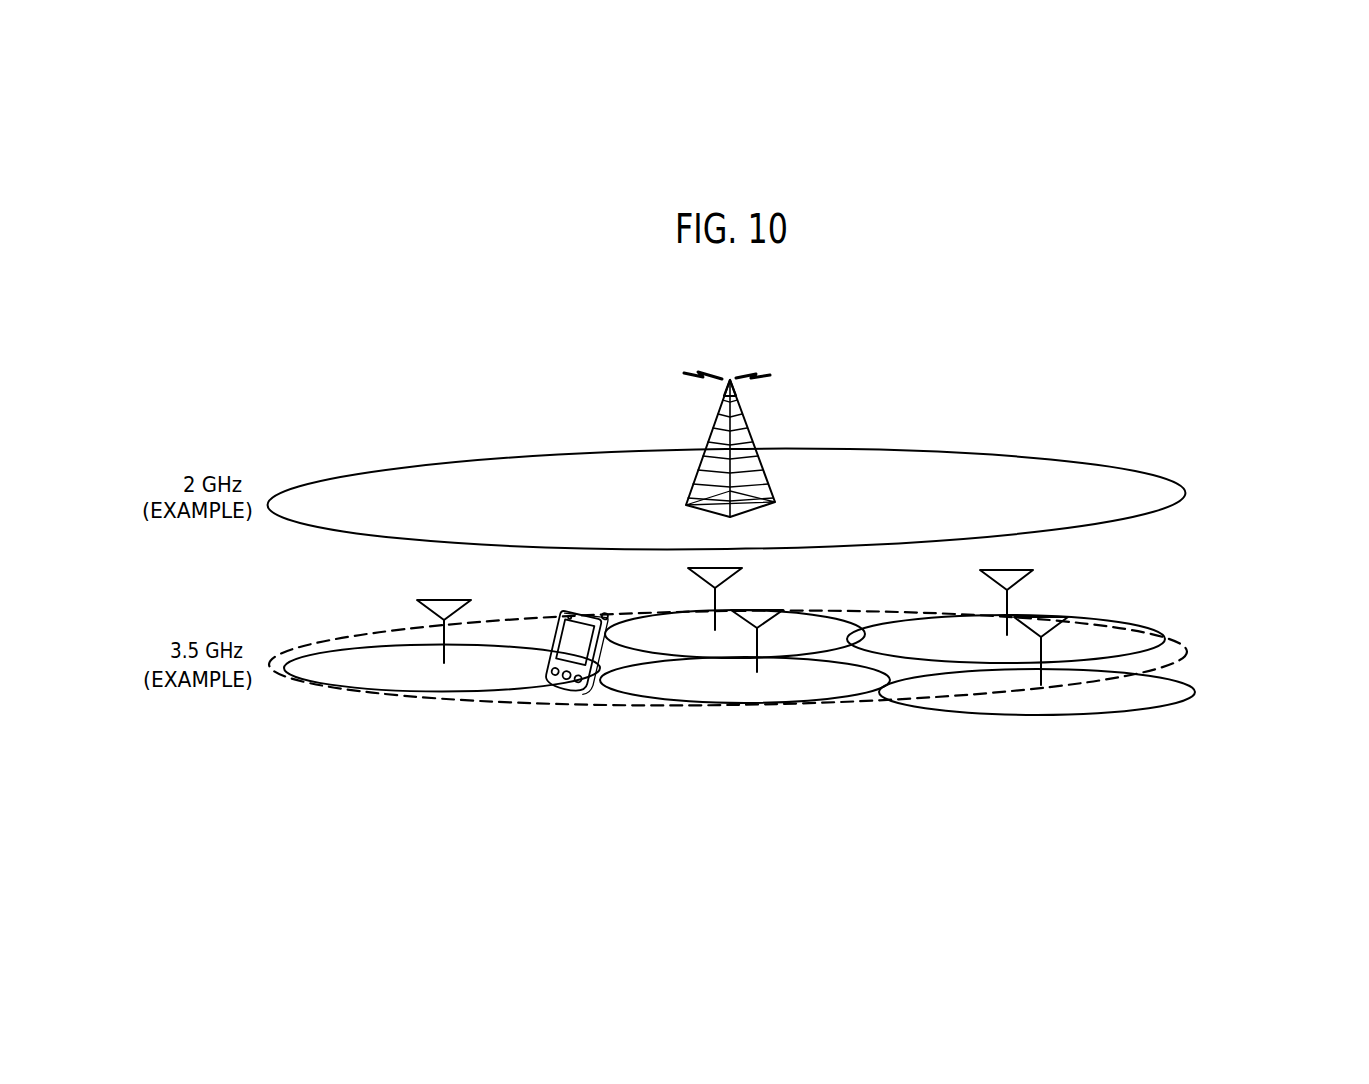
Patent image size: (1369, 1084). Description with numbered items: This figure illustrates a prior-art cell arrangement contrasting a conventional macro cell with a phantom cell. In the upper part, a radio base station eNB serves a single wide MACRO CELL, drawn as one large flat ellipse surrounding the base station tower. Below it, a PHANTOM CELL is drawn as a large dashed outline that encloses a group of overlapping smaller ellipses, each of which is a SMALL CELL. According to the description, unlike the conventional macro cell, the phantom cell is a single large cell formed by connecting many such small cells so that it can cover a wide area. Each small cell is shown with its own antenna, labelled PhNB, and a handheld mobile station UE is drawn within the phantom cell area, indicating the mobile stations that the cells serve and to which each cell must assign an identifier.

The radio base station eNB is at (733, 375).
The macro cell MACRO CELL is at (1011, 455).
The phantom cell PHANTOM CELL is at (1181, 648).
The small cell SMALL CELL is at (1132, 713).
The phantom cell base station PhNB is at (453, 600).
The mobile station UE is at (568, 696).